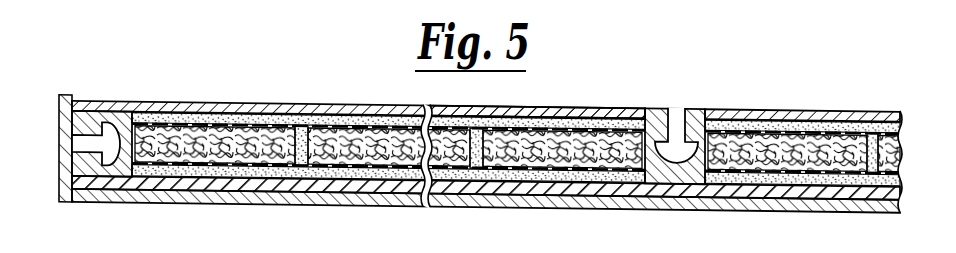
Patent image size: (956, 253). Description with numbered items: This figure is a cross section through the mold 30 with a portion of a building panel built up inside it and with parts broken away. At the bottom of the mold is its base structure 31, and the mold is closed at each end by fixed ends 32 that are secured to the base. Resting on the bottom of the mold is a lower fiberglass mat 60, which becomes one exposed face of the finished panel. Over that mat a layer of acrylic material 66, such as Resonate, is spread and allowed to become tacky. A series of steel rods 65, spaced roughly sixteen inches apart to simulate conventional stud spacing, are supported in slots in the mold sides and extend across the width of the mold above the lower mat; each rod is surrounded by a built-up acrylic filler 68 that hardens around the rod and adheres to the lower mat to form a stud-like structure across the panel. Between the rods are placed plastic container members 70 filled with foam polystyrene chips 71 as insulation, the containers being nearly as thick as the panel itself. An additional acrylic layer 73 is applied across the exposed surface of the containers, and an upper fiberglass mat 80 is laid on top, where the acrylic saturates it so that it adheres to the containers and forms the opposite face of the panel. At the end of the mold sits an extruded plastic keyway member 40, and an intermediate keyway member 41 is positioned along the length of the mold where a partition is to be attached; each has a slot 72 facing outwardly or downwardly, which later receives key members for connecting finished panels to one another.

The mold 30 is at (547, 213).
The base structure 31 is at (733, 205).
The fixed ends 32 is at (63, 192).
The extruded keyway member 40 is at (110, 117).
The intermediate extruded keyway member 41 is at (692, 120).
The fiberglass mat 60 is at (853, 192).
The steel rods 65 is at (308, 167).
The acrylic material layer 66 is at (615, 190).
The acrylic filler 68 is at (302, 125).
The plastic container members 70 is at (217, 101).
The foam polystyrene chips 71 is at (240, 157).
The slot 72 is at (117, 126).
The additional acrylic layer 73 is at (600, 118).
The upper fiberglass mat 80 is at (547, 108).